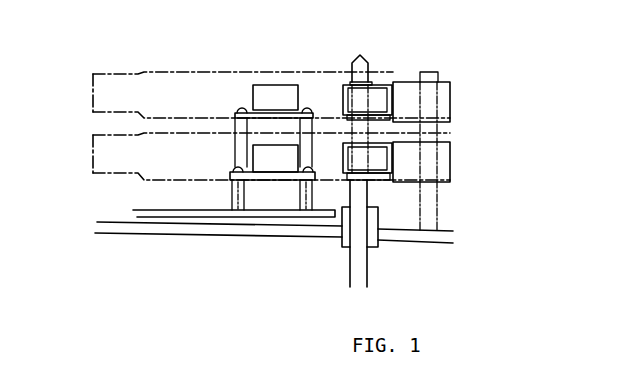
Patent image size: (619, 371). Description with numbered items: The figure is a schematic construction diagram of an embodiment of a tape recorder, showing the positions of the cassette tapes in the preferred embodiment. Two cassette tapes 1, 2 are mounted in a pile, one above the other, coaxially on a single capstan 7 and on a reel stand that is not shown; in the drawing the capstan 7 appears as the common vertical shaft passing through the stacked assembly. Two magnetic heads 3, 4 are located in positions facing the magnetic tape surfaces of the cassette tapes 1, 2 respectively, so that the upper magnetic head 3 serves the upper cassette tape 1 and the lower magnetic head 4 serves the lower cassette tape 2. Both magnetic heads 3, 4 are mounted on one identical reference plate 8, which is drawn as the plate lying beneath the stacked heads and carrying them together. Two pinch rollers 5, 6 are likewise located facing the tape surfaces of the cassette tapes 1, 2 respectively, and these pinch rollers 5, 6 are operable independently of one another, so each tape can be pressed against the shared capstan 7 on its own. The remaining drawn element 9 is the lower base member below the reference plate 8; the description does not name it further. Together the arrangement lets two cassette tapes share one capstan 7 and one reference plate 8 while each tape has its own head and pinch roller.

The cassette tape 1 is at (108, 88).
The cassette tape 2 is at (108, 152).
The magnetic head 3 is at (265, 92).
The magnetic head 4 is at (258, 162).
The pinch roller 5 is at (403, 88).
The pinch roller 6 is at (415, 158).
The capstan 7 is at (355, 65).
The reference plate 8 is at (146, 210).
The base plate 9 is at (122, 233).